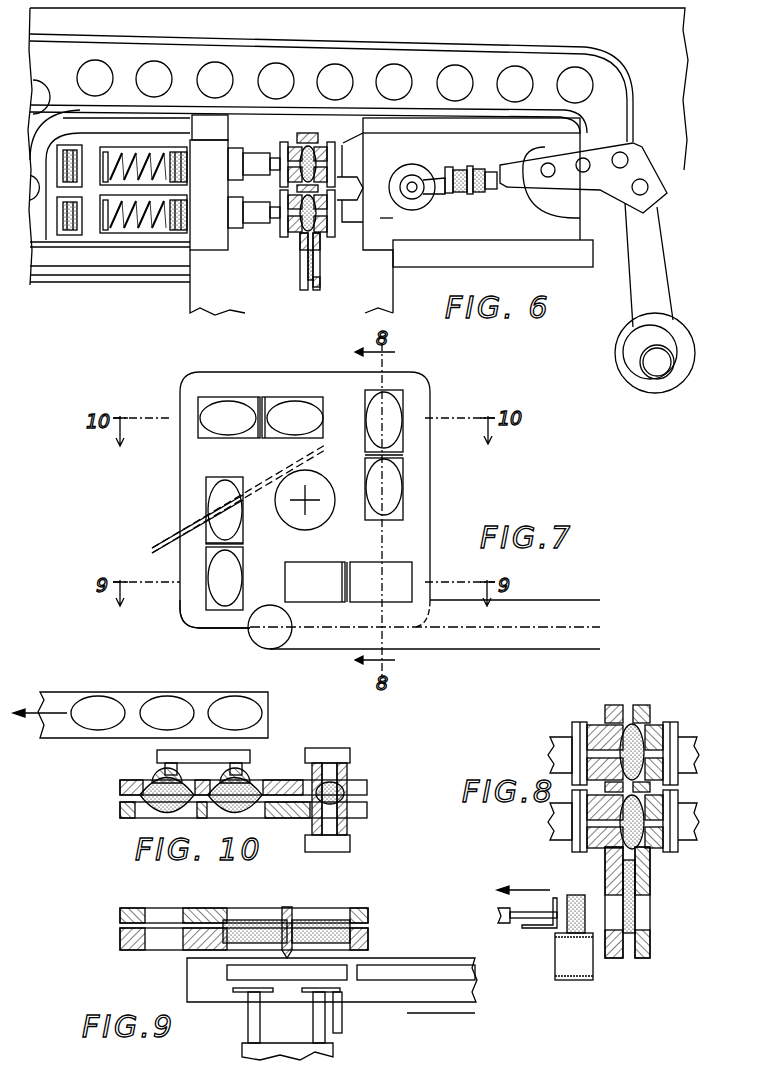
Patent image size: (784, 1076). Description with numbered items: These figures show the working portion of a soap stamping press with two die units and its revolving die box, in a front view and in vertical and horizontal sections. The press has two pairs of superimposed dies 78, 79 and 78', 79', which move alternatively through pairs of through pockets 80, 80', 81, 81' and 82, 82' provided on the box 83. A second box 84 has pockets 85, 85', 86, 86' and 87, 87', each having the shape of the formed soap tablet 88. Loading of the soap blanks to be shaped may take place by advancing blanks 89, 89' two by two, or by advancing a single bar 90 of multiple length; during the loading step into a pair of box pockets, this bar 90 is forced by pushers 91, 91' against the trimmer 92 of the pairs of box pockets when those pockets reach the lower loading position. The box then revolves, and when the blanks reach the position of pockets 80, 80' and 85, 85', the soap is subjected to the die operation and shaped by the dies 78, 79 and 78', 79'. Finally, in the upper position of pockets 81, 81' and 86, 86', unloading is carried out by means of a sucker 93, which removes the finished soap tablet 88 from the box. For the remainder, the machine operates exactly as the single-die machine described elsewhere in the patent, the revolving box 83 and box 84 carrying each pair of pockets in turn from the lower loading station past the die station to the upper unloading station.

In FIG. 8, the die 78 is at (585, 736).
In FIG. 8, the die 79 is at (672, 736).
In FIG. 8, the die 78' is at (585, 837).
In FIG. 8, the die 79' is at (672, 837).
In FIG. 7, the pocket 80 is at (413, 489).
In FIG. 7, the pocket 80' is at (416, 422).
In FIG. 7, the pocket 81 is at (305, 392).
In FIG. 7, the pocket 81' is at (238, 392).
In FIG. 7, the pocket 82 is at (197, 509).
In FIG. 7, the pocket 82' is at (197, 576).
In FIG. 6, the box 83 is at (303, 287).
In FIG. 7, the box 83 is at (193, 615).
In FIG. 10, the box 83 is at (362, 815).
In FIG. 8, the box 83 is at (608, 953).
In FIG. 6, the box 84 is at (322, 288).
In FIG. 10, the box 84 is at (350, 780).
In FIG. 8, the box 84 is at (647, 947).
In FIG. 7, the pocket 85 is at (414, 487).
In FIG. 7, the pocket 85' is at (416, 406).
In FIG. 7, the pocket 86 is at (295, 391).
In FIG. 7, the pocket 86' is at (228, 391).
In FIG. 7, the pocket 87 is at (197, 510).
In FIG. 7, the pocket 87' is at (195, 582).
In FIG. 10, the soap tablet 88 is at (247, 712).
In FIG. 7, the blank 89 is at (315, 566).
In FIG. 7, the blank 89' is at (380, 566).
In FIG. 9, the bar 90 is at (328, 918).
In FIG. 9, the pusher 91 is at (240, 1015).
In FIG. 9, the pusher 91' is at (338, 1015).
In FIG. 9, the trimmer 92 is at (283, 933).
In FIG. 10, the sucker 93 is at (250, 775).